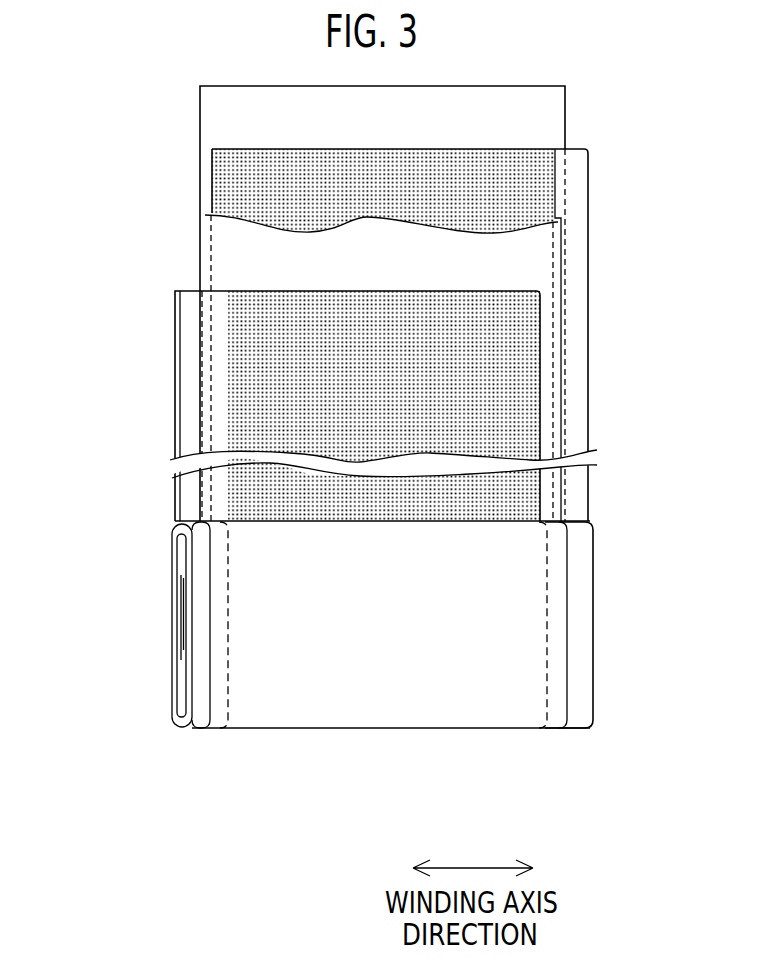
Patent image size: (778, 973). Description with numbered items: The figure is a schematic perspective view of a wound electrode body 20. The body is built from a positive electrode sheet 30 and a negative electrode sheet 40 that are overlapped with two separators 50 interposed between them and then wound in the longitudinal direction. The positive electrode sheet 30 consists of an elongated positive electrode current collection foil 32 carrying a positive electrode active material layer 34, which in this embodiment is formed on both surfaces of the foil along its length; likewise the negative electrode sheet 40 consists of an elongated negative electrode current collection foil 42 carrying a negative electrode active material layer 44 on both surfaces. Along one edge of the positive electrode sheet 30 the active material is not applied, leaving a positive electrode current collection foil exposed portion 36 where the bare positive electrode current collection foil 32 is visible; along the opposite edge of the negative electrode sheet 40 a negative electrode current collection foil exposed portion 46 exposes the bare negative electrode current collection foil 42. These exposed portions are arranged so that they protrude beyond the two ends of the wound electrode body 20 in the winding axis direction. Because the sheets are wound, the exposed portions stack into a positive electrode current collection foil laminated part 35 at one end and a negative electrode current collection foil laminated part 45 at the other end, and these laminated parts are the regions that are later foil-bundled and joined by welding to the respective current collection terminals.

The wound electrode body 20 is at (330, 705).
The positive electrode sheet 30 is at (291, 509).
The positive electrode current collection foil 32 is at (175, 342).
The positive electrode active material layer 34 is at (232, 432).
The positive electrode current collection foil laminated part 35 is at (183, 633).
The positive electrode current collection foil exposed portion 36 is at (190, 402).
The negative electrode sheet 40 is at (464, 438).
The negative electrode current collection foil 42 is at (590, 227).
The negative electrode active material layer 44 is at (556, 170).
The negative electrode current collection foil laminated part 45 is at (582, 632).
The negative electrode current collection foil exposed portion 46 is at (578, 384).
The separator 50 is at (222, 127).